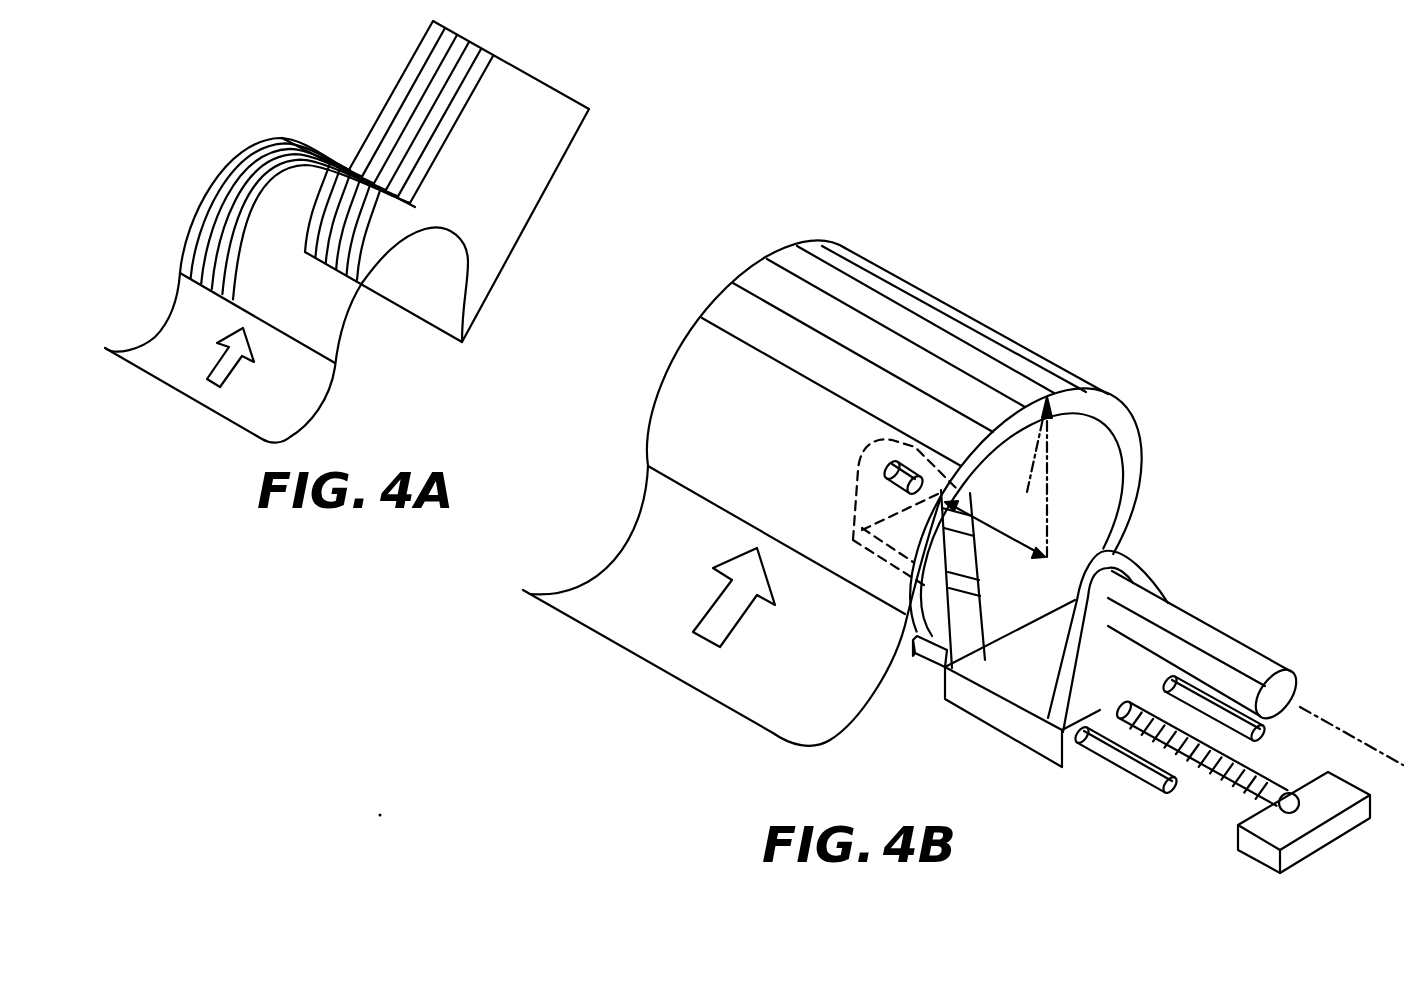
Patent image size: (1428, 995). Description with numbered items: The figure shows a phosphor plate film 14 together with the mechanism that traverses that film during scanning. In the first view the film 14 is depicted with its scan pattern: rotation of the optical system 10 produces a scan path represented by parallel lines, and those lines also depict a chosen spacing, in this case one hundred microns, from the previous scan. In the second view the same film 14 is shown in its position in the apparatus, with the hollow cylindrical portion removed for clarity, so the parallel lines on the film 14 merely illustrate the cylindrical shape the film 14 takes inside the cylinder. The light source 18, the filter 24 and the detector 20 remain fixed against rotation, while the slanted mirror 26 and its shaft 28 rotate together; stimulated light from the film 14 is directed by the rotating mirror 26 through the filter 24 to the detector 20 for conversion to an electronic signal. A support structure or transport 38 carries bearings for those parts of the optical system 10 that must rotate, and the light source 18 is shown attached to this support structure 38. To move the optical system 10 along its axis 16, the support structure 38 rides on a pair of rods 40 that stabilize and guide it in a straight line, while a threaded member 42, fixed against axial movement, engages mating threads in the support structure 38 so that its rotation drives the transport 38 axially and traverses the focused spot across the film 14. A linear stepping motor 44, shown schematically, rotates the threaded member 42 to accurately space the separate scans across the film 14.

In FIG. 4B, the optical system 10 is at (1207, 435).
In FIG. 4A, the phosphor plate film 14 is at (573, 143).
In FIG. 4B, the phosphor plate film 14 is at (838, 738).
In FIG. 4B, the axis 16 is at (1320, 715).
In FIG. 4B, the light source 18 is at (873, 490).
In FIG. 4B, the detector 20 is at (1207, 612).
In FIG. 4B, the filter 24 is at (1115, 531).
In FIG. 4B, the slanted mirror 26 is at (1082, 545).
In FIG. 4B, the shaft 28 is at (995, 495).
In FIG. 4B, the support structure 38 is at (1037, 750).
In FIG. 4B, the rods 40 is at (1273, 747).
In FIG. 4B, the threaded member 42 is at (1240, 793).
In FIG. 4B, the linear stepping motor 44 is at (1347, 837).